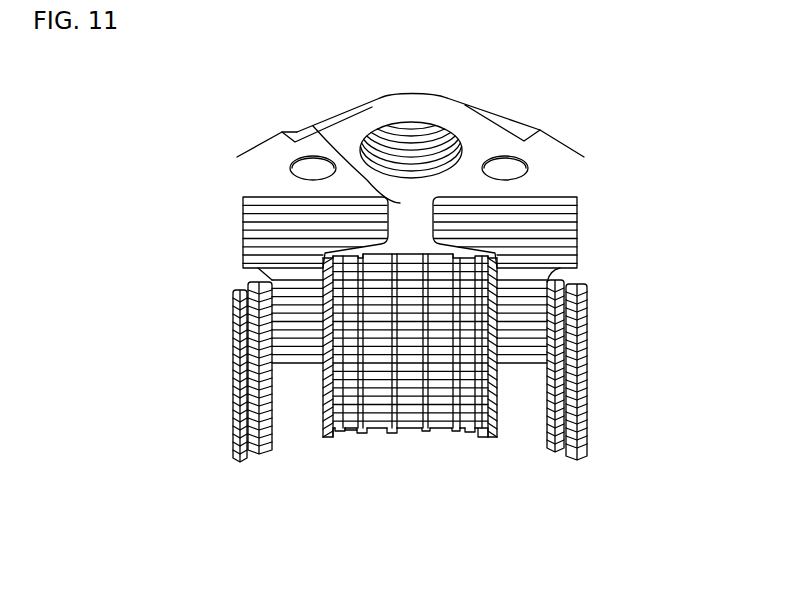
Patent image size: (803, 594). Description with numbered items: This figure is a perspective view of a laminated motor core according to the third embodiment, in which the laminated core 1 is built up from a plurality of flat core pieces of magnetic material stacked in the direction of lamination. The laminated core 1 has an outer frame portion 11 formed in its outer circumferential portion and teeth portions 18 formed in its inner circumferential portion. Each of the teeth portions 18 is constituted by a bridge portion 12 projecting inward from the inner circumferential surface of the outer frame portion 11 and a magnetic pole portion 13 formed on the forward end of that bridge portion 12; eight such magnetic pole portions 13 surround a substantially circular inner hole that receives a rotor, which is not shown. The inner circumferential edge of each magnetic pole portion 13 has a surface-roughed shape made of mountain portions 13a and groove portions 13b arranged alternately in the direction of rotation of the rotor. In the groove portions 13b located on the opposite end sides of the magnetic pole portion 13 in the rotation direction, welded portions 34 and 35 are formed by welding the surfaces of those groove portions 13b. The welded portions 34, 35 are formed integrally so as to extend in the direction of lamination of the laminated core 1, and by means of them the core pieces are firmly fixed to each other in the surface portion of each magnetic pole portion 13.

The laminated core 1 is at (426, 298).
The outer frame portion 11 is at (406, 124).
The bridge portion 12 is at (457, 210).
The magnetic pole portion 13 is at (389, 331).
The mountain portion 13a is at (363, 435).
The groove portion 13b is at (353, 432).
The teeth portion 18 is at (323, 128).
The welded portion 34 is at (462, 432).
The welded portion 35 is at (340, 435).